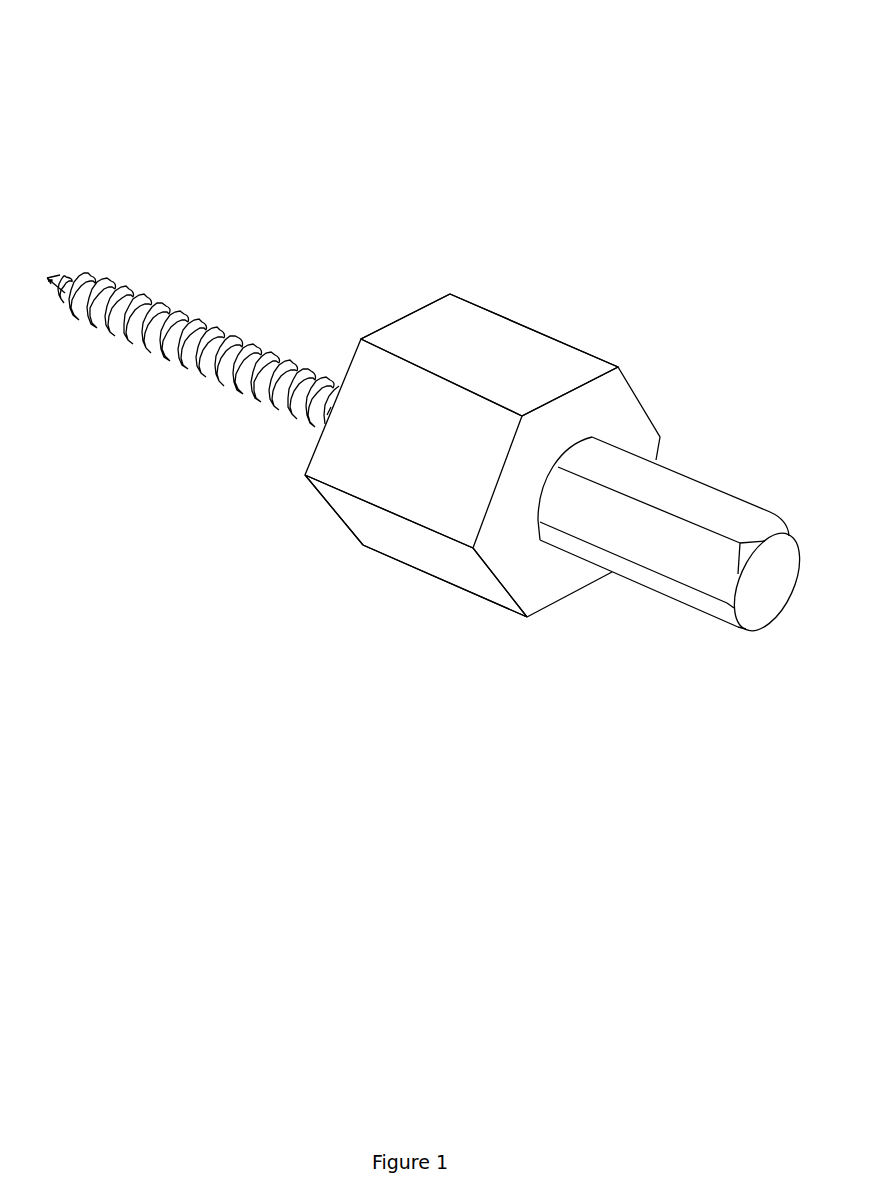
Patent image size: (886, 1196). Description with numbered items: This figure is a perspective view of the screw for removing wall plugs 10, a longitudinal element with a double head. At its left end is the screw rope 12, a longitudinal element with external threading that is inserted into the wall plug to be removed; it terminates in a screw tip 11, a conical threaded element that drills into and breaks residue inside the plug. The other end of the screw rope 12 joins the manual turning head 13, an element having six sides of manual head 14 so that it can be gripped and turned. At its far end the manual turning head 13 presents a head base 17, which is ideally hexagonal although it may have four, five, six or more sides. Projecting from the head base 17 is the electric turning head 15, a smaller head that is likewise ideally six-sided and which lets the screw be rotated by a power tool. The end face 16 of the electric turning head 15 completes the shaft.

The screw for removing wall plugs 10 is at (340, 270).
The screw tip 11 is at (50, 283).
The screw rope 12 is at (180, 300).
The manual turning head 13 is at (483, 312).
The sides of manual head 14 is at (552, 358).
The electric turning head 15 is at (677, 470).
The chamfered end face of shank 16 is at (740, 517).
The head base 17 is at (523, 575).